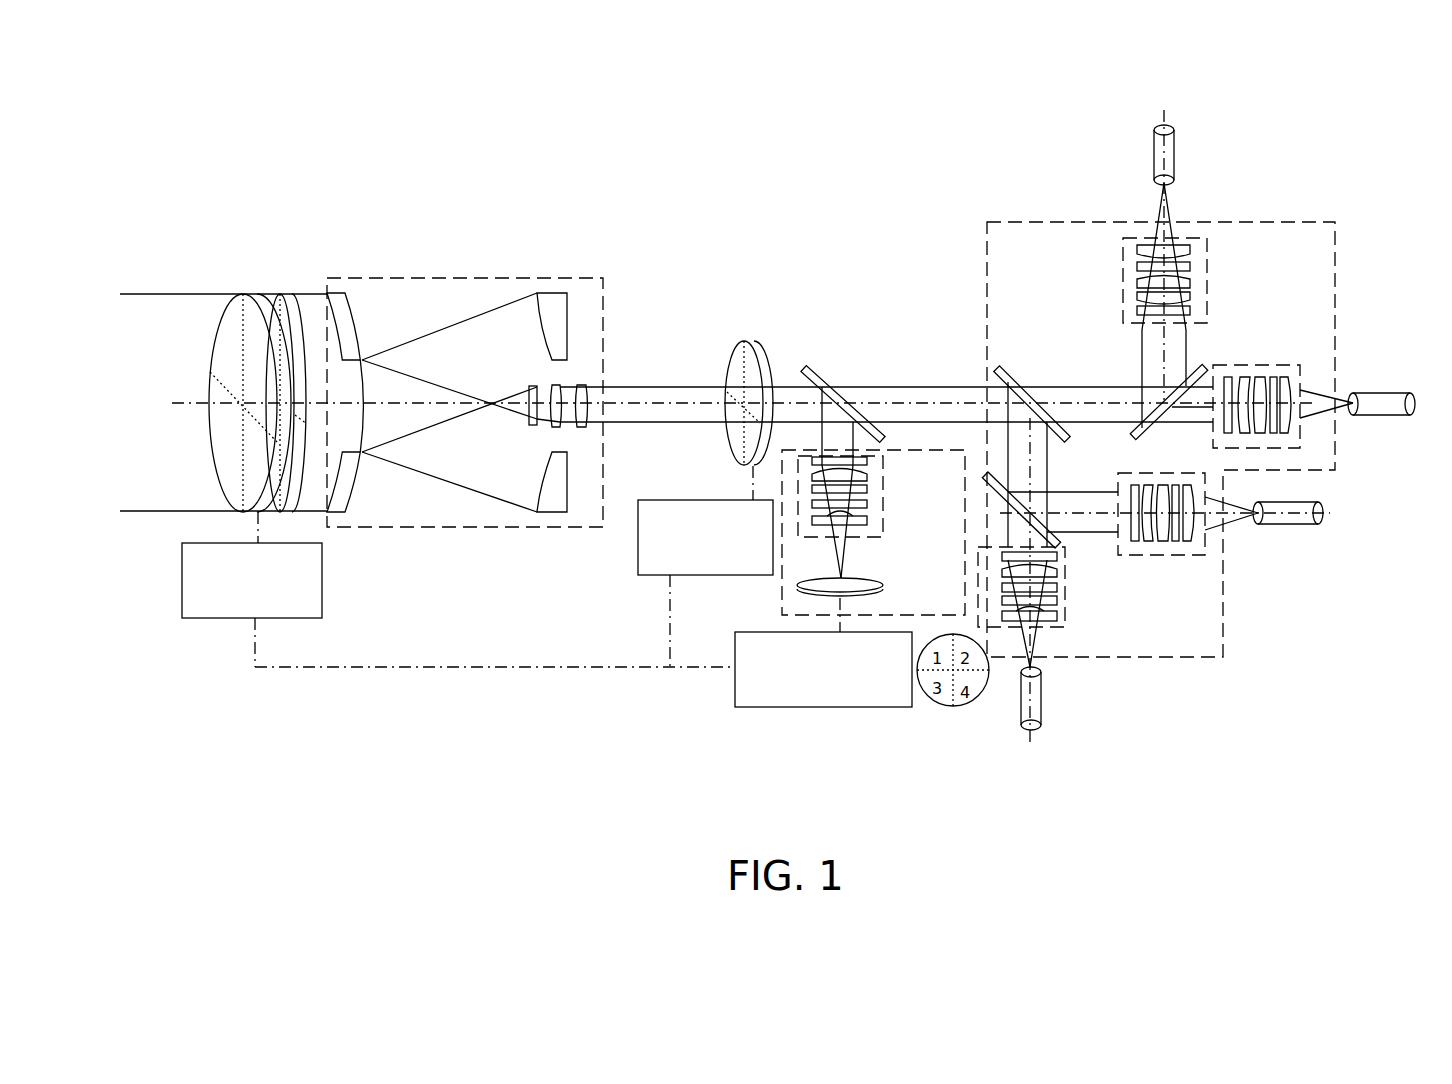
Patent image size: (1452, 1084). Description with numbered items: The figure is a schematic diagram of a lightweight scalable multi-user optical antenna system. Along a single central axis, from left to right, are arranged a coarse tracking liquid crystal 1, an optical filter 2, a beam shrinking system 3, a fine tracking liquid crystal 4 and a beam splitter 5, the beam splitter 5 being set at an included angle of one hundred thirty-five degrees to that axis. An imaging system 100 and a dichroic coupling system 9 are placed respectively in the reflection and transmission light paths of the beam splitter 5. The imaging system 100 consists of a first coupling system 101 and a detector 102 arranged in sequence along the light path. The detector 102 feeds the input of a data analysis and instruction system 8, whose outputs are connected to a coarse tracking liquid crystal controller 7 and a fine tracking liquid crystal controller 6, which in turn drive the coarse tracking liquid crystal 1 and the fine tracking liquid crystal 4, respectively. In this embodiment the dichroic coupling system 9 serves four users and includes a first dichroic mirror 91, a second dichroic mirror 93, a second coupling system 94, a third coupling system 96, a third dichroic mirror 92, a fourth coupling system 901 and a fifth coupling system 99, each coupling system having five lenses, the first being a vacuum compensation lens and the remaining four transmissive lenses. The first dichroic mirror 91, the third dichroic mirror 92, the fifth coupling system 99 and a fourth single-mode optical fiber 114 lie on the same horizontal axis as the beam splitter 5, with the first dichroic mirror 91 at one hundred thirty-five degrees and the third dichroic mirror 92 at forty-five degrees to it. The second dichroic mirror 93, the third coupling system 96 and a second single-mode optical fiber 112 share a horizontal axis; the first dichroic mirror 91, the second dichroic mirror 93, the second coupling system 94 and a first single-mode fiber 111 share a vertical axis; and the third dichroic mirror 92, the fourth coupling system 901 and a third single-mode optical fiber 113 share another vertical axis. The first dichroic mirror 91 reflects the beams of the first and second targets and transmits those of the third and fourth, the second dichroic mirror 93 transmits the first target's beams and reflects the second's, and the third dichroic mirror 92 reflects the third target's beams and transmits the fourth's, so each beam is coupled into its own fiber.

The coarse tracking liquid crystal 1 is at (235, 327).
The optical filter 2 is at (290, 300).
The beam shrinking system 3 is at (460, 278).
The fine tracking liquid crystal 4 is at (744, 342).
The beam splitter 5 is at (830, 383).
The fine tracking liquid crystal controller 6 is at (705, 537).
The coarse tracking liquid crystal controller 7 is at (252, 580).
The data analysis and instruction system 8 is at (823, 669).
The dichroic coupling system 9 is at (1165, 427).
The first dichroic mirror 91 is at (1012, 373).
The third dichroic mirror 92 is at (1153, 425).
The second dichroic mirror 93 is at (1060, 550).
The second coupling system 94 is at (1050, 630).
The third coupling system 96 is at (1183, 557).
The fifth coupling system 99 is at (1258, 362).
The imaging system 100 is at (873, 528).
The first coupling system 101 is at (885, 507).
The detector 102 is at (883, 585).
The first single-mode fiber 111 is at (1043, 705).
The second single-mode optical fiber 112 is at (1293, 520).
The third single-mode optical fiber 113 is at (1176, 160).
The fourth single-mode optical fiber 114 is at (1385, 418).
The fourth coupling system 901 is at (1207, 258).